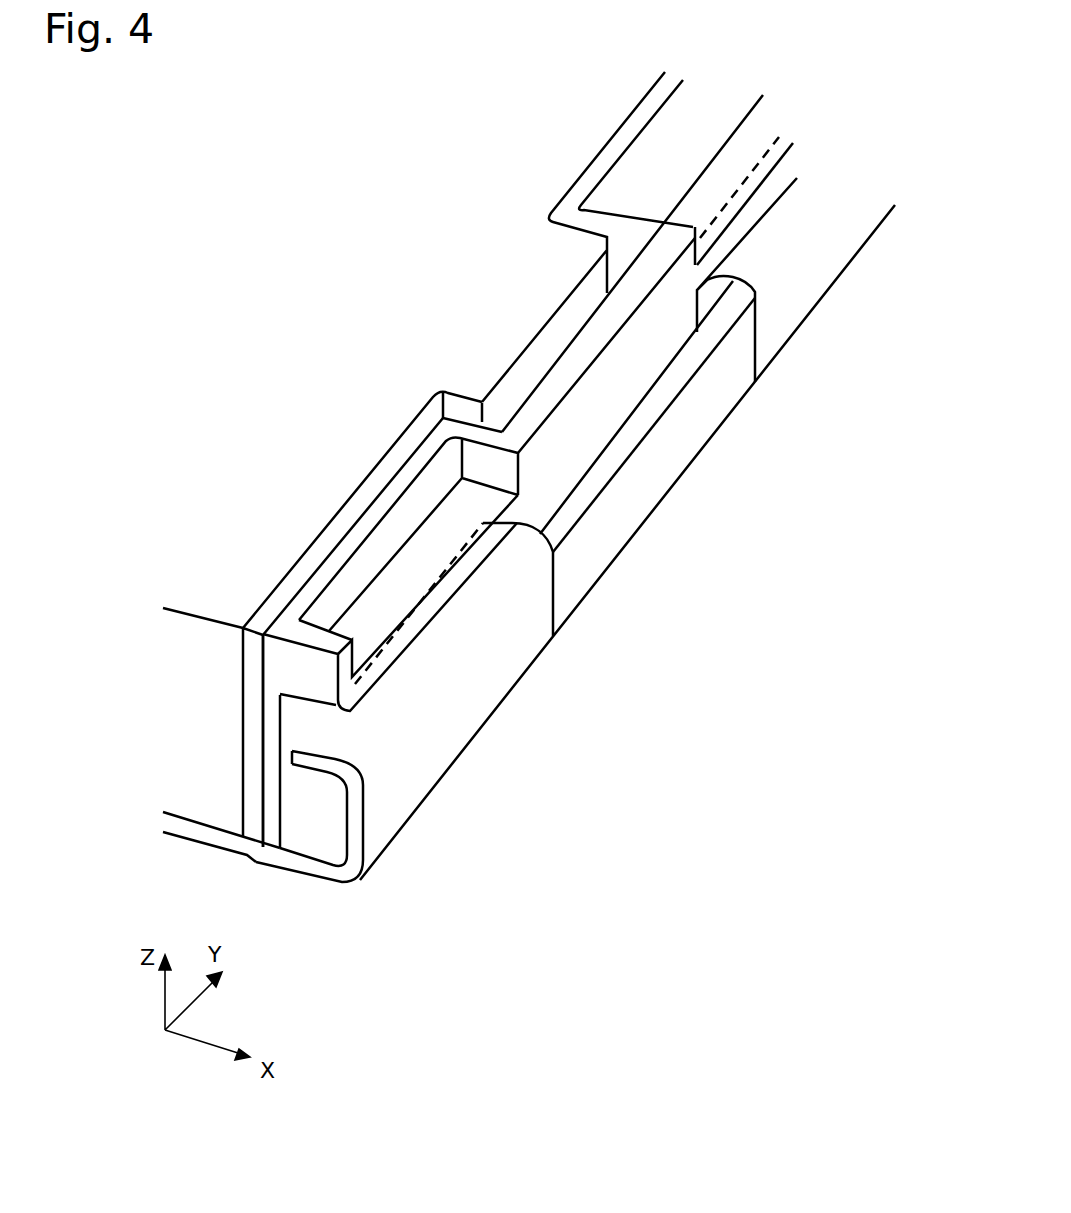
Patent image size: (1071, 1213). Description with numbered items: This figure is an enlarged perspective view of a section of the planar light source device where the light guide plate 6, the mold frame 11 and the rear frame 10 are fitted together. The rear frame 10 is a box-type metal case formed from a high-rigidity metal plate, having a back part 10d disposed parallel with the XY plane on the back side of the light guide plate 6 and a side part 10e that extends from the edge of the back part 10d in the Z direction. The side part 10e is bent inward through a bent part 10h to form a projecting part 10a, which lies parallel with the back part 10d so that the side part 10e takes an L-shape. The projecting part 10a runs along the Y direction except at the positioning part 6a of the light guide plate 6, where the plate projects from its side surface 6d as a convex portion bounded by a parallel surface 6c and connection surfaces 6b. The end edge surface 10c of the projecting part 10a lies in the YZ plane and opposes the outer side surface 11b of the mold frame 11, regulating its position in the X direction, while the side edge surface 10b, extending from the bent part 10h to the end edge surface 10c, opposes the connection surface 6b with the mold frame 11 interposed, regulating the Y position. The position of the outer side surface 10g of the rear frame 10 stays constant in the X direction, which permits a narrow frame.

The light guide plate 6 is at (368, 283).
The positioning part 6a is at (513, 320).
The connection surface 6b is at (460, 410).
The parallel surface 6c is at (565, 320).
The side surface 6d is at (258, 605).
The rear frame 10 is at (838, 177).
The projecting part 10a is at (433, 637).
The side edge surface 10b is at (727, 278).
The end edge surface 10c is at (283, 762).
The back part 10d is at (193, 830).
The side part 10e is at (355, 807).
The outer side surface 10g is at (683, 447).
The bent part 10h is at (342, 770).
The mold frame 11 is at (538, 400).
The outer side surface 11b is at (692, 262).